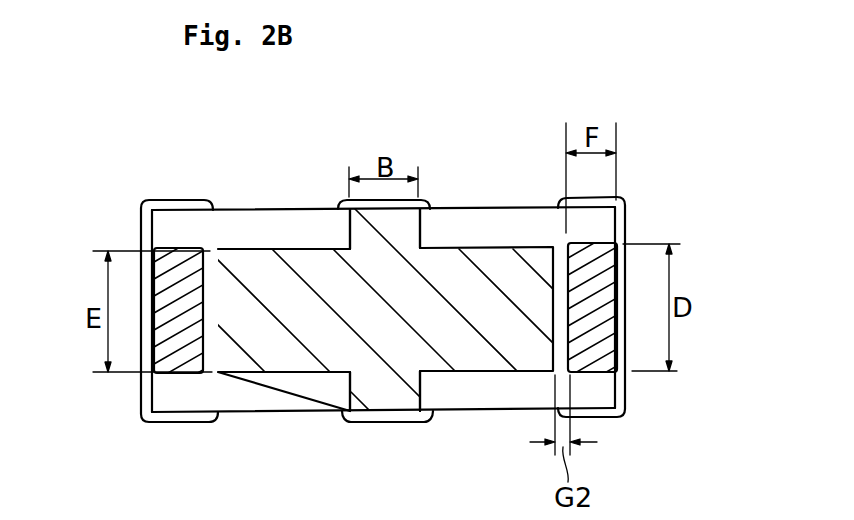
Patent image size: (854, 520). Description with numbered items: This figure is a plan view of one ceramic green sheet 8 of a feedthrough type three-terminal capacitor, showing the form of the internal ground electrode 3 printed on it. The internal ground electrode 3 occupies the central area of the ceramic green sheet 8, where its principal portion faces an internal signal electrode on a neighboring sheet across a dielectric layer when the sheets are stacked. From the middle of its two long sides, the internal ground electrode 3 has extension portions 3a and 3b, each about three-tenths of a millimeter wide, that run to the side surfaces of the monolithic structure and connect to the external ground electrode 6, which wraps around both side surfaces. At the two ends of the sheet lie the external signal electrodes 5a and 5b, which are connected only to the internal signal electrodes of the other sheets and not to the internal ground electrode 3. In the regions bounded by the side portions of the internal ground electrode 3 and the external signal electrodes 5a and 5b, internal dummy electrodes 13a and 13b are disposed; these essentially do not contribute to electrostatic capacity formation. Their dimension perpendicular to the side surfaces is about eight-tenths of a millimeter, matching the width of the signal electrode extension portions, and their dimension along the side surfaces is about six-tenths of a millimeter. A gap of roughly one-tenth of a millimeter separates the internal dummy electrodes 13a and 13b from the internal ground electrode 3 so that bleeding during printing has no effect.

The internal ground electrode 3 is at (497, 248).
The extension portion of internal ground electrode 3a is at (348, 230).
The extension portion of internal ground electrode 3b is at (423, 385).
The external signal electrode 5a is at (142, 205).
The external signal electrode 5b is at (617, 194).
The external ground electrode 6 is at (390, 423).
The ceramic green sheet 8 is at (237, 209).
The internal dummy electrode 13a is at (183, 380).
The internal dummy electrode 13b is at (603, 375).